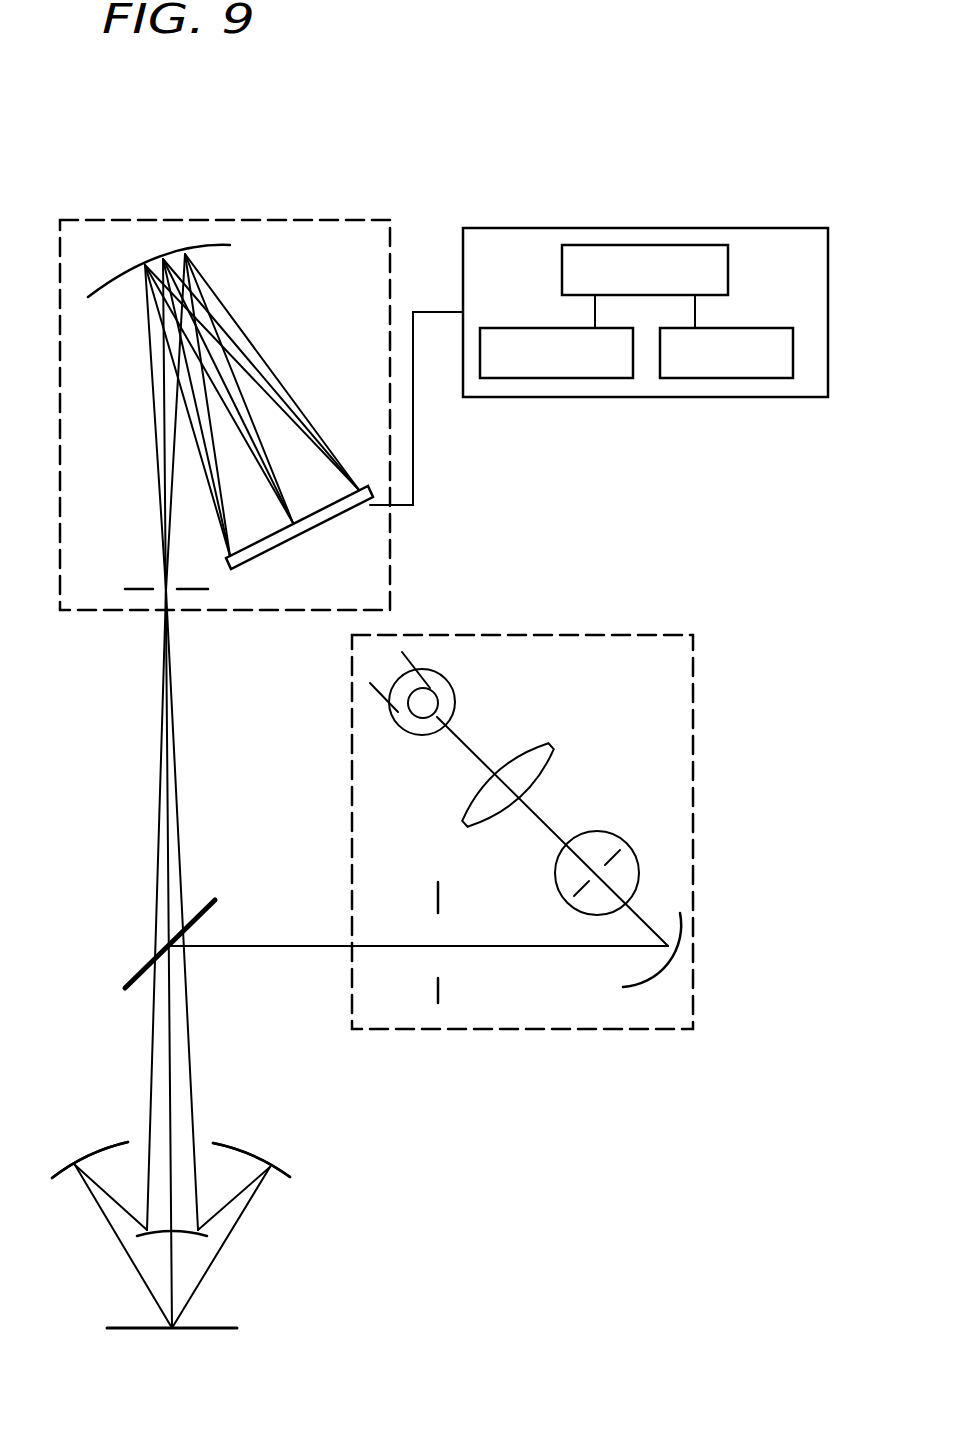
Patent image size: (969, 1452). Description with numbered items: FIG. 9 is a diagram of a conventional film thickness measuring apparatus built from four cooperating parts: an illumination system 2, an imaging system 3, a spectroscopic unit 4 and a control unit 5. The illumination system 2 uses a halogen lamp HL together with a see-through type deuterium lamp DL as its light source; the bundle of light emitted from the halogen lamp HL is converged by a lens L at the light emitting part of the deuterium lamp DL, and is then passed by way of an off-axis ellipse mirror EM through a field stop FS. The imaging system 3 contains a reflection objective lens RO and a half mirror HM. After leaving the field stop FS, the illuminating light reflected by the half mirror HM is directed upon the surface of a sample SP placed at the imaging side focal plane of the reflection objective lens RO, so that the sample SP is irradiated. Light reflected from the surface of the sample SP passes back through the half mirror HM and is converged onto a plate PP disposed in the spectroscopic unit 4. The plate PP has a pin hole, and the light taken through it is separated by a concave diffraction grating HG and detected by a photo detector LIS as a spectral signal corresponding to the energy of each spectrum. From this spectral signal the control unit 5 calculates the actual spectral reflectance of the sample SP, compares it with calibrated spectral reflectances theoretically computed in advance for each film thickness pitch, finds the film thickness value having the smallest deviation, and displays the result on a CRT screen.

The concave diffraction grating HG is at (202, 248).
The spectroscopic unit 4 is at (303, 218).
The control unit 5 is at (637, 228).
The photo detector LIS is at (293, 542).
The plate PP is at (195, 590).
The illumination system 2 is at (645, 1030).
The halogen lamp HL is at (453, 680).
The lens L is at (553, 743).
The see-through type deuterium lamp DL is at (613, 837).
The off-axis ellipse mirror EM is at (660, 962).
The field stop FS is at (438, 995).
The half mirror HM is at (207, 910).
The imaging system 3 is at (253, 1142).
The reflection objective lens RO is at (273, 1167).
The sample SP is at (207, 1327).